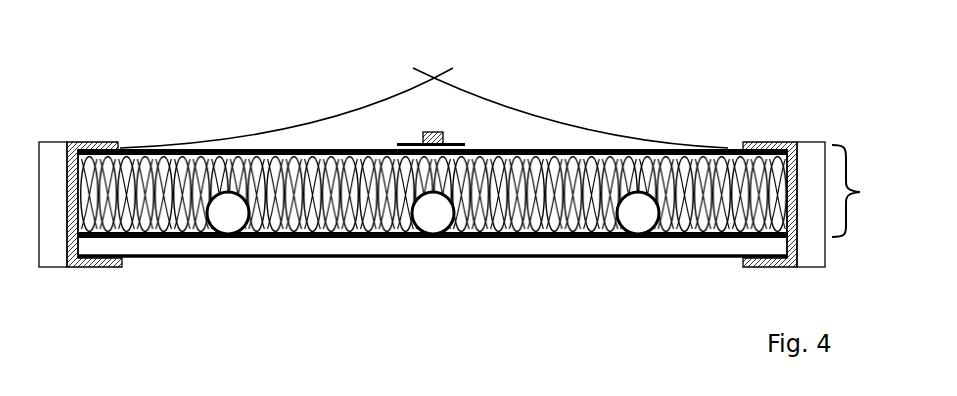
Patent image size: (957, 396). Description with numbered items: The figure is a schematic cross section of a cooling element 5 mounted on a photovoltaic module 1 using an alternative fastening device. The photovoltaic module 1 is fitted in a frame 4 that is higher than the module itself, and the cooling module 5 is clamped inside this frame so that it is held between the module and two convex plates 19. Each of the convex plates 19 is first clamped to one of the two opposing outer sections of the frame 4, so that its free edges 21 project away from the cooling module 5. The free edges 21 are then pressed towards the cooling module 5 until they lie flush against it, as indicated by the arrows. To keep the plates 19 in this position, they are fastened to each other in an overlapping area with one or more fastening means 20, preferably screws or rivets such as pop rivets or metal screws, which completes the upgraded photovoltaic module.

The photovoltaic module 1 is at (523, 248).
The frame 4 is at (95, 145).
The cooling element 5 is at (483, 201).
The convex plates 19 is at (338, 108).
The fastening means 20 is at (433, 133).
The free edges 21 is at (453, 63).